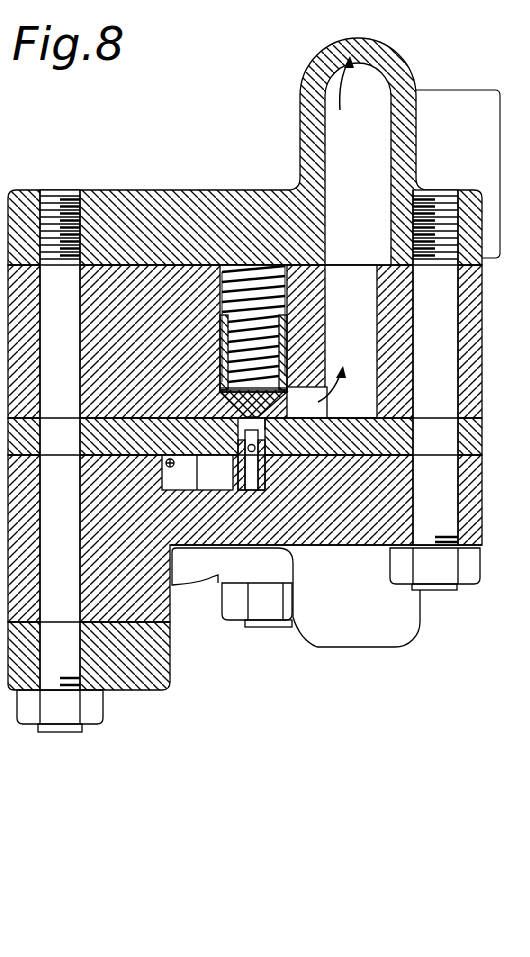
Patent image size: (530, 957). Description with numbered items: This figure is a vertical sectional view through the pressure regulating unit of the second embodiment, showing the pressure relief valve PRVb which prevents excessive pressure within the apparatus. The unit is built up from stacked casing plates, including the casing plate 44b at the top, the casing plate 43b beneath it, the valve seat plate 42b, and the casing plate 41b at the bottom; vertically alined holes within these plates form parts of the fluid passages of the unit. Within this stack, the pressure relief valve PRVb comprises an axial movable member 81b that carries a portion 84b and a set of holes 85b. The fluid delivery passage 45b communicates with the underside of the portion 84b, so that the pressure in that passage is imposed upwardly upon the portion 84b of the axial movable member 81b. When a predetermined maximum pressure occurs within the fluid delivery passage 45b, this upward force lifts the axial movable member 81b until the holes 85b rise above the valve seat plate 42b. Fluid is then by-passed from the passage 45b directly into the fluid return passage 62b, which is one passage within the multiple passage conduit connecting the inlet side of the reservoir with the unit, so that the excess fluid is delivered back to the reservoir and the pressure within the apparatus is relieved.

The fluid return passage 62b is at (360, 98).
The casing plate 44b is at (477, 228).
The casing plate 43b is at (480, 310).
The valve seat plate 42b is at (478, 440).
The casing plate 41b is at (473, 510).
The axial movable member 81b is at (214, 357).
The pressure relief valve PRVb is at (217, 412).
The holes 85b is at (238, 442).
The portion of the axial movable member 84b is at (266, 438).
The fluid delivery passage 45b is at (180, 478).